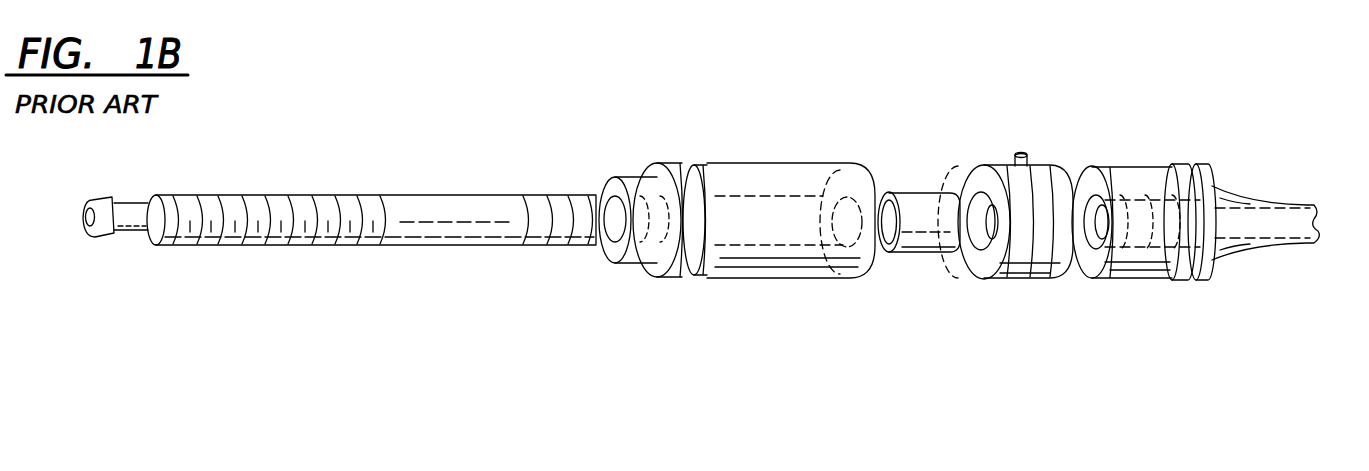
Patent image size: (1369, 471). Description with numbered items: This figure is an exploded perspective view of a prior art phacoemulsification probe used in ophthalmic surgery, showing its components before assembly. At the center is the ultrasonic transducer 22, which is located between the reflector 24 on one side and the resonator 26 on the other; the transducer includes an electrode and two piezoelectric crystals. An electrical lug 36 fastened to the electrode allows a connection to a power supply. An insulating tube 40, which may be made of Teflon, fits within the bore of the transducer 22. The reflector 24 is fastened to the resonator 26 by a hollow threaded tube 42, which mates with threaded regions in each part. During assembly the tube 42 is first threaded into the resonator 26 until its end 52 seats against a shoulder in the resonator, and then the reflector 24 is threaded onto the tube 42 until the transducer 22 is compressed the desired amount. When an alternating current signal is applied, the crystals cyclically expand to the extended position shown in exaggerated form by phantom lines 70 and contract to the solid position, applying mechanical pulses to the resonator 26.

The hollow threaded tube 42 is at (420, 198).
The end 52 is at (605, 192).
The reflector 24 is at (795, 176).
The insulating tube 40 is at (915, 200).
The ultrasonic transducer 22 is at (982, 282).
The electrical lug 36 is at (1022, 152).
The phantom lines 70 is at (957, 172).
The resonator 26 is at (1256, 192).